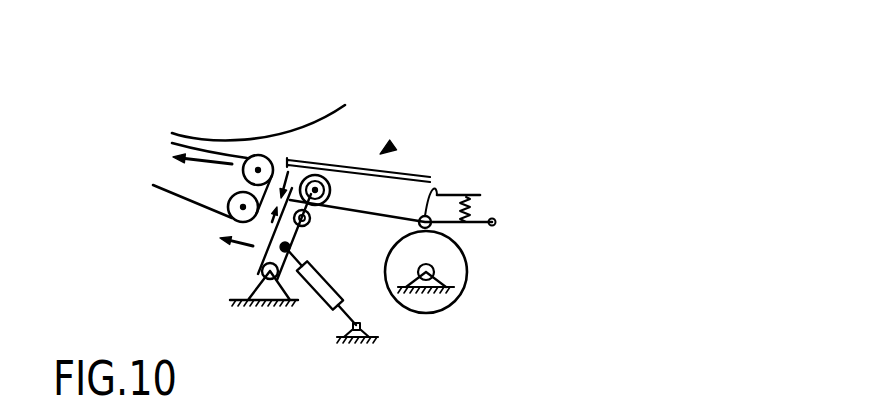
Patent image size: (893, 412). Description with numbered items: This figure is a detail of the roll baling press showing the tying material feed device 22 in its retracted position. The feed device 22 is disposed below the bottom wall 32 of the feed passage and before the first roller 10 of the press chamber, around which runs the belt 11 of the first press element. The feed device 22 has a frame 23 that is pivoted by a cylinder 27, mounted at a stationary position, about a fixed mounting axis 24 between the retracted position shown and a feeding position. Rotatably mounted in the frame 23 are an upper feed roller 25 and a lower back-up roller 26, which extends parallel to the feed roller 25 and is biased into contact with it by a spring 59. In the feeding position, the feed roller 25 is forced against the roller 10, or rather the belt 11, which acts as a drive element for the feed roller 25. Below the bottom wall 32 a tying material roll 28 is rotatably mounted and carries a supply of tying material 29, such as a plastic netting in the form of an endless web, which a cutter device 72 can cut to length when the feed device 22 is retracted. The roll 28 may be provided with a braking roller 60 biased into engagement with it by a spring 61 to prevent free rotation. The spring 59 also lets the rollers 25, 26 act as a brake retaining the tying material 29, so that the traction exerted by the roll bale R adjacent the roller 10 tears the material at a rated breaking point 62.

The roll bale R is at (268, 122).
The first roller 10 is at (252, 183).
The belt 11 is at (172, 143).
The cutter device 72 is at (290, 164).
The tying material feed device 22 is at (392, 145).
The bottom wall 32 is at (388, 172).
The upper feed roller 25 is at (333, 188).
The lower back-up roller 26 is at (312, 220).
The frame 23 is at (262, 262).
The fixed mounting axis 24 is at (262, 273).
The spring 59 is at (280, 307).
The cylinder 27 is at (323, 312).
The rated breaking point 62 is at (438, 194).
The braking roller 60 is at (436, 190).
The spring 61 is at (470, 206).
The tying material 29 is at (395, 222).
The tying material roll 28 is at (435, 303).